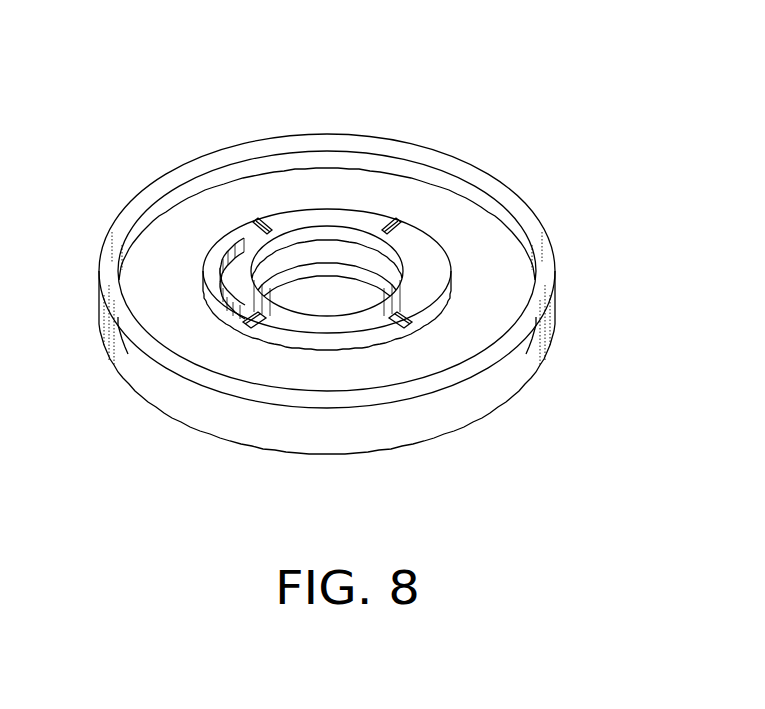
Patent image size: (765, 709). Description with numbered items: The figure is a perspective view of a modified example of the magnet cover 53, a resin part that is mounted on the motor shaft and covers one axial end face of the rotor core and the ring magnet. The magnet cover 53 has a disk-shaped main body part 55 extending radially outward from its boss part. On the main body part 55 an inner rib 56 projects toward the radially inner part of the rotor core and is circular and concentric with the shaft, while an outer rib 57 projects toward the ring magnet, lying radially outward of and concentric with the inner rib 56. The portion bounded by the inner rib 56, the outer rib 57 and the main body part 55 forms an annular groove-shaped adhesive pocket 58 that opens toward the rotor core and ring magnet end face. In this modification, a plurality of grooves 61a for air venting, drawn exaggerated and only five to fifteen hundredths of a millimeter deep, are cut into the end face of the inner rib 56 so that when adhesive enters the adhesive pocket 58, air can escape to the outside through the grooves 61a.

The magnet cover 53 is at (468, 131).
The main body part 55 is at (268, 370).
The inner rib 56 is at (331, 212).
The outer rib 57 is at (213, 163).
The adhesive pocket 58 is at (404, 190).
The grooves for air venting 61a is at (400, 328).